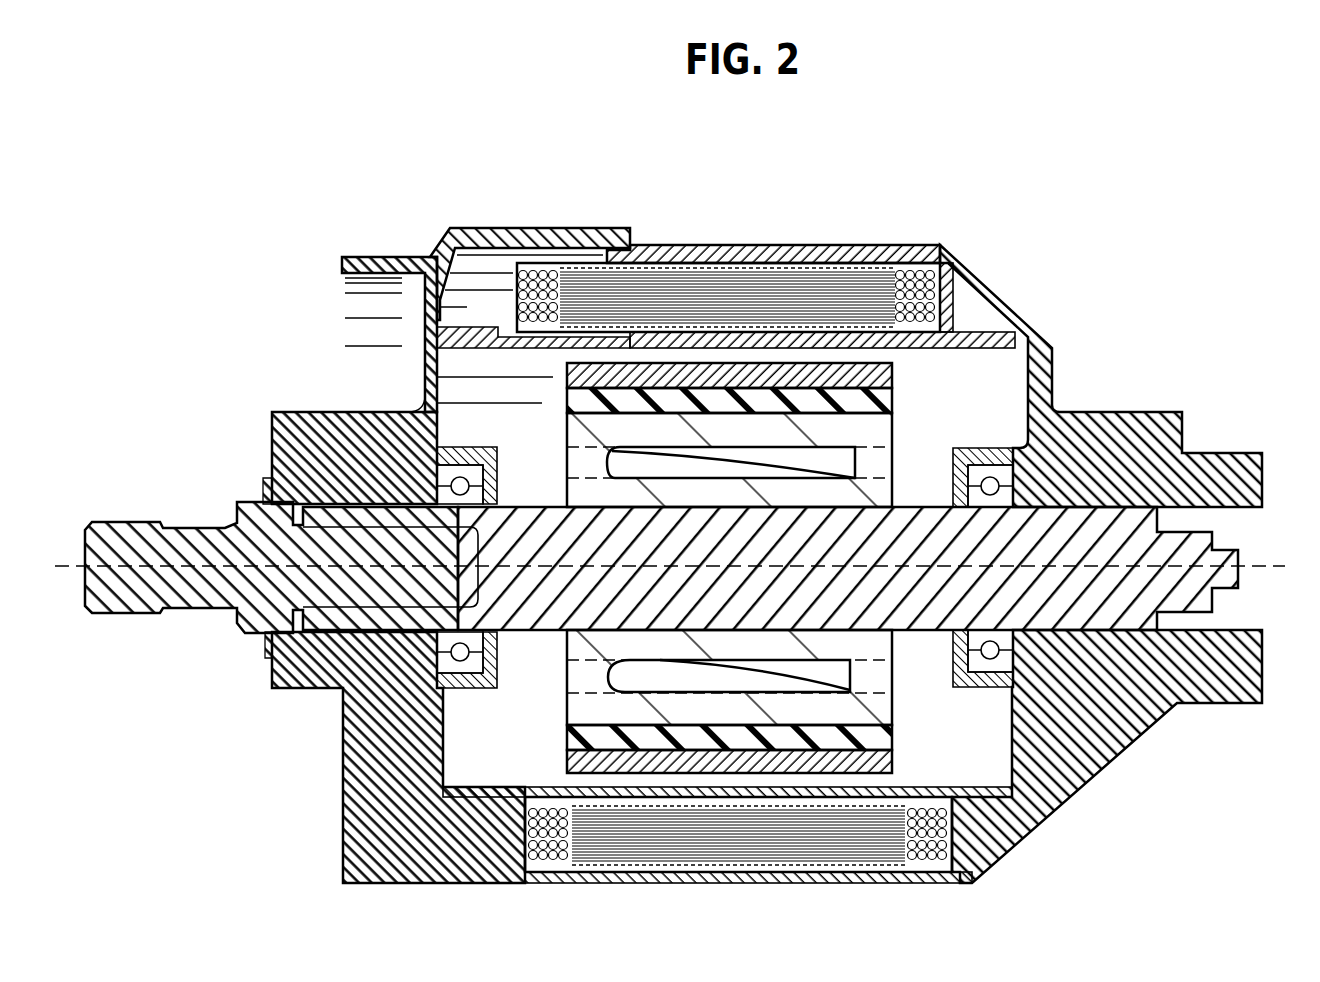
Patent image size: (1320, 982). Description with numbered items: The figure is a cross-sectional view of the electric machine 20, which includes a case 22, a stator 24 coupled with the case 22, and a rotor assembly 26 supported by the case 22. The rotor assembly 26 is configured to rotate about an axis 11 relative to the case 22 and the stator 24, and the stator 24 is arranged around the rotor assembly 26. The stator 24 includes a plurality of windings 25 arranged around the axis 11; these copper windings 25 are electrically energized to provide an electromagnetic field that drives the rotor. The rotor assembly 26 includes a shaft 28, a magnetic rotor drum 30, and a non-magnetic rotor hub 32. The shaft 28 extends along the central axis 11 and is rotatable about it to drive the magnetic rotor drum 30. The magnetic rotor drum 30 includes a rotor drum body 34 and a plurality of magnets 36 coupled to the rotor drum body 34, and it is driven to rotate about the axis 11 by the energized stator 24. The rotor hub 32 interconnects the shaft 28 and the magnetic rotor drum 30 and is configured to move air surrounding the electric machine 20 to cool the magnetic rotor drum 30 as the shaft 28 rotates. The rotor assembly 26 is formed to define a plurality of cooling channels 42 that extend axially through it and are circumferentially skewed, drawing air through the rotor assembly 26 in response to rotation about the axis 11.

The axis 11 is at (62, 556).
The electric machine 20 is at (320, 186).
The case 22 is at (470, 220).
The stator 24 is at (578, 246).
The windings 25 is at (696, 260).
The rotor assembly 26 is at (998, 352).
The shaft 28 is at (913, 500).
The magnetic rotor drum 30 is at (835, 196).
The non-magnetic rotor hub 32 is at (898, 422).
The rotor drum body 34 is at (833, 376).
The magnets 36 is at (869, 363).
The cooling channels 42 is at (822, 480).